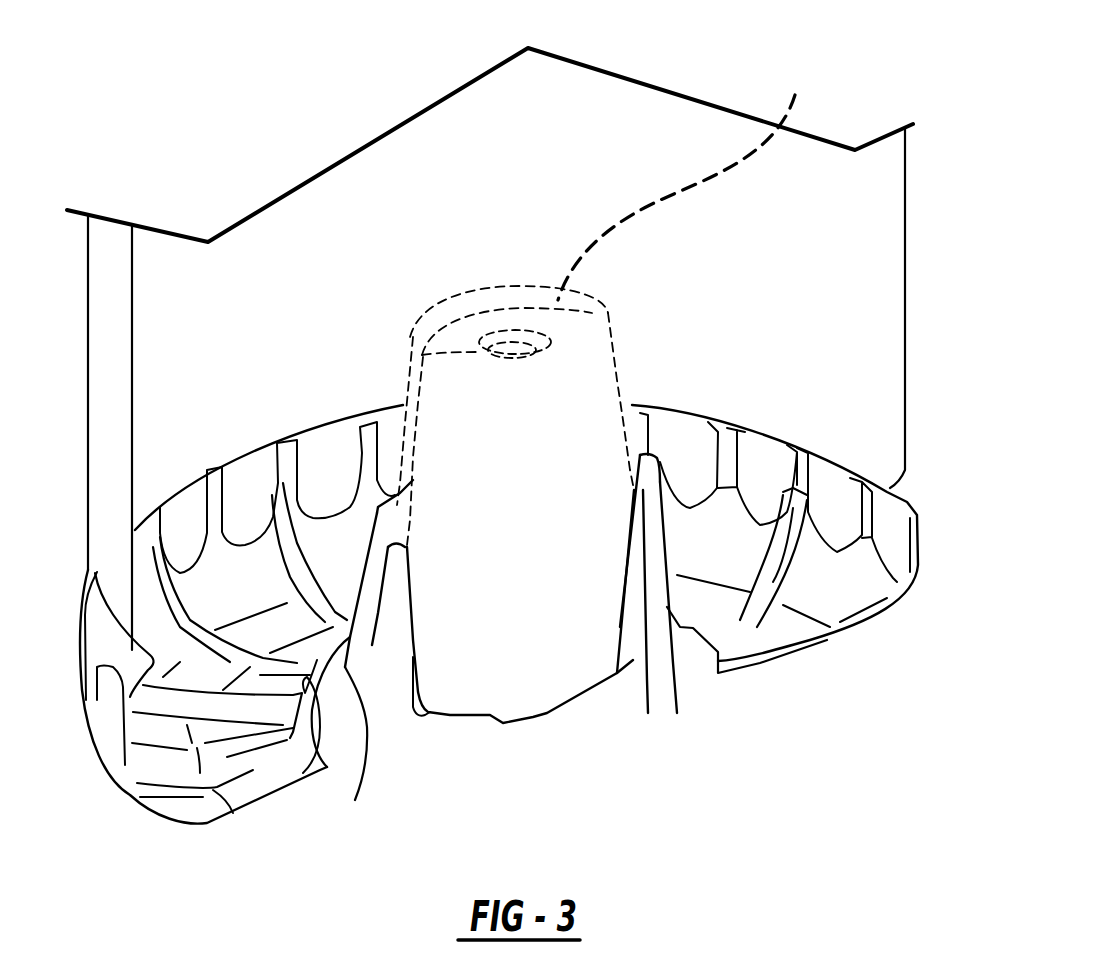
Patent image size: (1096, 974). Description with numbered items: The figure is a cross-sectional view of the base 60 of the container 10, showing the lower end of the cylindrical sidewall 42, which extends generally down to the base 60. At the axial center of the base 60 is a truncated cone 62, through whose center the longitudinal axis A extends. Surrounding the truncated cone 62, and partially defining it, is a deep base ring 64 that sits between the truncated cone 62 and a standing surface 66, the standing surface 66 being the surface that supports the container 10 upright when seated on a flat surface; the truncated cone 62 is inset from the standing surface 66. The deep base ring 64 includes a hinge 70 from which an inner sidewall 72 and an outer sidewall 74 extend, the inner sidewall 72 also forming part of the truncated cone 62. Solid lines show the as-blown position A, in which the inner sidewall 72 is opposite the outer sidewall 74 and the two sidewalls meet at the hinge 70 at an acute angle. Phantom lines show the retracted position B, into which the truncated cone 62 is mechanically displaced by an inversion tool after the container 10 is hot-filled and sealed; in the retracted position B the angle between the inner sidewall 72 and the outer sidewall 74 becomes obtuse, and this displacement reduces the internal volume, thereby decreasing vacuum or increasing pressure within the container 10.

The container 10 is at (155, 93).
The cylindrical sidewall 42 is at (120, 477).
The retracted position B is at (684, 180).
The longitudinal axis / as-blown position A is at (557, 713).
The base 60 is at (213, 822).
The truncated cone 62 is at (530, 717).
The deep base ring 64 is at (367, 713).
The standing surface 66 is at (227, 815).
The hinge 70 is at (387, 645).
The inner sidewall 72 is at (417, 690).
The outer sidewall 74 is at (372, 645).